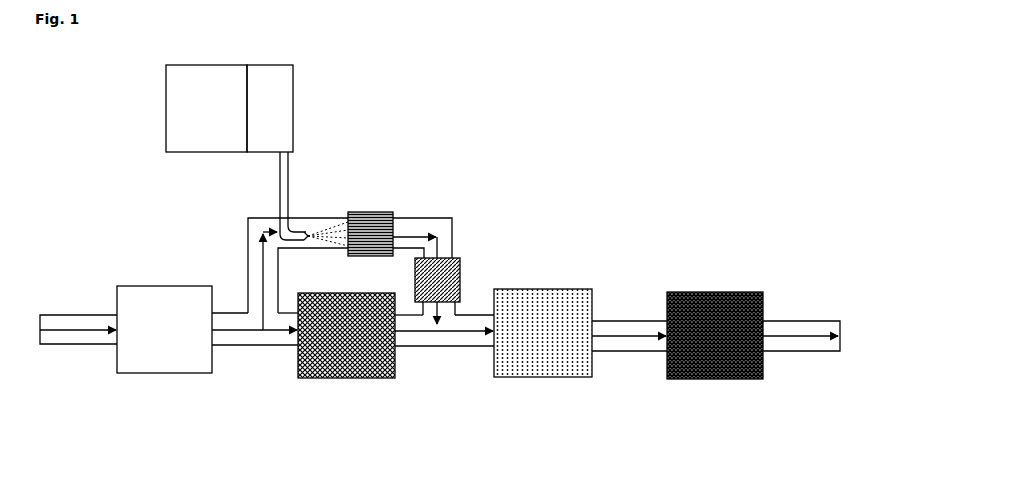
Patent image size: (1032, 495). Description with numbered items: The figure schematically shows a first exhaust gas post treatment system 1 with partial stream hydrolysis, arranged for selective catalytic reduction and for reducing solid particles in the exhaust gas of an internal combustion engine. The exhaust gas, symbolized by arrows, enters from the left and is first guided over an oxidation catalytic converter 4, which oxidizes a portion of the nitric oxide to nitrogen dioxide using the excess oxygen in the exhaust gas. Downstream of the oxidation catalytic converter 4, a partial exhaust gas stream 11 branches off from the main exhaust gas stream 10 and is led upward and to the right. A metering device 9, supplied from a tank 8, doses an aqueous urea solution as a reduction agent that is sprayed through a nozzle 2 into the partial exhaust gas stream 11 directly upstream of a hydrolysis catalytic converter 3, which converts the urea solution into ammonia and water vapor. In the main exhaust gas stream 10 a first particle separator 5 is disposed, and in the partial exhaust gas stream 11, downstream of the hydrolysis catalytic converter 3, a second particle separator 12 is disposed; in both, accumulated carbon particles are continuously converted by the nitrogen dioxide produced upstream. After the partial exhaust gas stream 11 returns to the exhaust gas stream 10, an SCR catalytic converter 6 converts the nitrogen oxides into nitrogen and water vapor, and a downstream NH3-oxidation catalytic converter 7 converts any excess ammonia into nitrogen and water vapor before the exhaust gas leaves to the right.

The exhaust gas aftertreatment system 1 is at (116, 187).
The nozzle 2 is at (302, 230).
The hydrolysis catalytic converter 3 is at (380, 212).
The oxidation catalytic converter 4 is at (162, 352).
The first particle separator 5 is at (357, 368).
The SCR catalytic converter 6 is at (540, 315).
The NH3-oxidation catalytic converter 7 is at (727, 300).
The reducing agent tank 8 is at (204, 80).
The metering device 9 is at (280, 90).
The exhaust gas stream 10 is at (228, 328).
The partial exhaust gas stream 11 is at (260, 277).
The second particle separator 12 is at (460, 262).